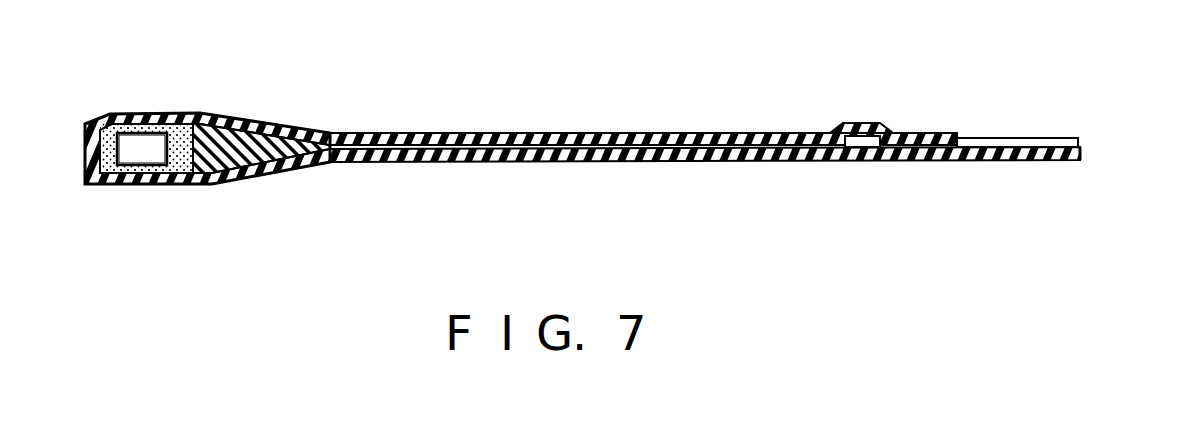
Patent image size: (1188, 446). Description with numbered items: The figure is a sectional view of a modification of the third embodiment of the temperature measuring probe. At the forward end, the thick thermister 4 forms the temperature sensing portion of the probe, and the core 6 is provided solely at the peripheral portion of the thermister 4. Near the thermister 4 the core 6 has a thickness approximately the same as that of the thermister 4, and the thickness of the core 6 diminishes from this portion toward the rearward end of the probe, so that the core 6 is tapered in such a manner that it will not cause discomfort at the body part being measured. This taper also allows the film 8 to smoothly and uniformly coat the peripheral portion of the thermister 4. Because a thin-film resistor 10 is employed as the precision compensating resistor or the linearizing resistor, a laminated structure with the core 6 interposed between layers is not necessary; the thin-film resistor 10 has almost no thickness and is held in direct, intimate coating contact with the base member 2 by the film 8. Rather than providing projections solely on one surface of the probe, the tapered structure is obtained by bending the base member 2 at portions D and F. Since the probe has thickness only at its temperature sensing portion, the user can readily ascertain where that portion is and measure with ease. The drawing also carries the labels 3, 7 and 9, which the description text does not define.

The base member 2 is at (103, 184).
The inner tube 3 is at (152, 173).
The thermister 4 is at (158, 137).
The core 6 is at (263, 130).
The filler material 7 is at (182, 136).
The film 8 is at (533, 136).
The proximal end 9 is at (1082, 148).
The thin-film resistor 10 is at (871, 141).
The bent portion F is at (214, 192).
The bent portion D is at (336, 173).